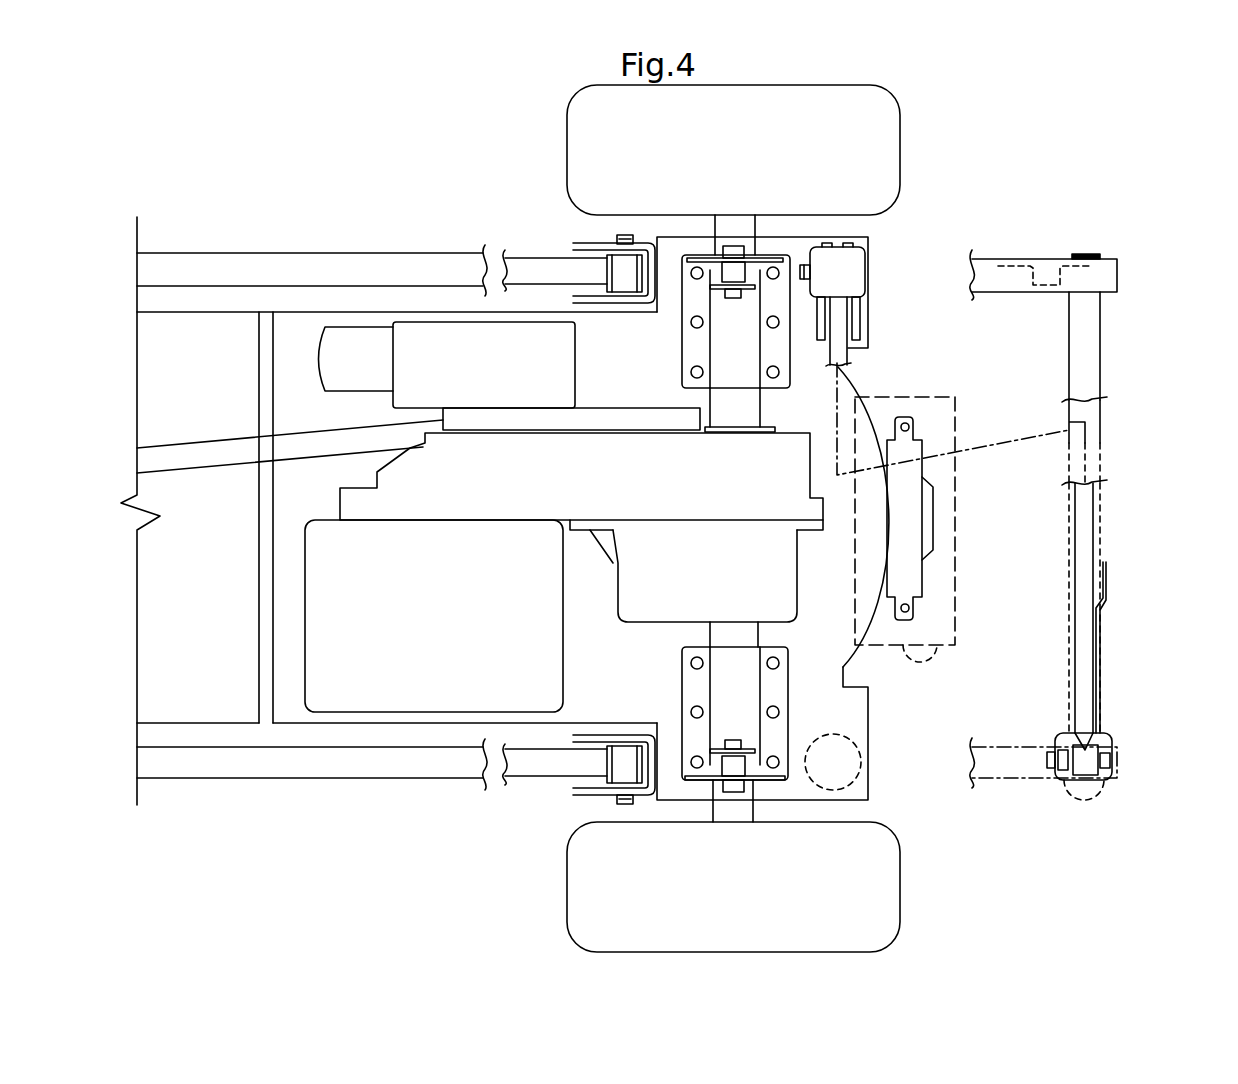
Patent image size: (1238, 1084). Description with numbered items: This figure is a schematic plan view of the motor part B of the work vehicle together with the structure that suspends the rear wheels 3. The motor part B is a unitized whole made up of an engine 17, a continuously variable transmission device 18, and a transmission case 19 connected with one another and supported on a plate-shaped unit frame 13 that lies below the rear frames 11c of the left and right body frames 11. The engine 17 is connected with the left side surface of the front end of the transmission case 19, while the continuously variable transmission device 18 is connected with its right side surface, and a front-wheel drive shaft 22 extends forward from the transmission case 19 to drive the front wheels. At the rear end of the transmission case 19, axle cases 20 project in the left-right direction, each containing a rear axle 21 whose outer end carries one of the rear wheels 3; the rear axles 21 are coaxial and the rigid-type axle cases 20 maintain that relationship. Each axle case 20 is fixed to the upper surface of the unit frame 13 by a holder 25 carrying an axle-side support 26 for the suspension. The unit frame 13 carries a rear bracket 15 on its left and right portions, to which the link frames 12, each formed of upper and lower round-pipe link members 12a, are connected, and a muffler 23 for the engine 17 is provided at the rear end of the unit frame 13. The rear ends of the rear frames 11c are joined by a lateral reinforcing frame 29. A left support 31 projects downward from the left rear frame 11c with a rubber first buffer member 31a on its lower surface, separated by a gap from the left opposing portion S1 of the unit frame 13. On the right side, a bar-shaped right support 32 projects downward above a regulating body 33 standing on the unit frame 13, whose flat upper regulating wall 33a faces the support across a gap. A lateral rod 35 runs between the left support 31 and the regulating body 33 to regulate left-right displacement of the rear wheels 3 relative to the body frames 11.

The rear wheel 3 is at (885, 147).
The body frame 11 is at (619, 515).
The rear frame 11c is at (315, 272).
The link frame 12 is at (535, 516).
The link member 12a is at (535, 272).
The unit frame 13 is at (862, 718).
The rear bracket 15 is at (615, 303).
The engine 17 is at (434, 616).
The continuously variable transmission device 18 is at (510, 376).
The transmission case 19 is at (581, 527).
The axle case 20 is at (738, 422).
The rear axle 21 is at (727, 228).
The front-wheel drive shaft 22 is at (210, 455).
The muffler 23 is at (955, 585).
The holder 25 is at (745, 375).
The axle-side support 26 is at (775, 262).
The lateral reinforcing frame 29 is at (1090, 342).
The left support 31 is at (1100, 668).
The first buffer member 31a is at (1062, 785).
The right support 32 is at (1030, 290).
The regulating body 33 is at (862, 318).
The regulating wall 33a is at (870, 268).
The lateral rod 35 is at (838, 360).
The left opposing portion S1 is at (865, 768).
The motor part B is at (393, 729).